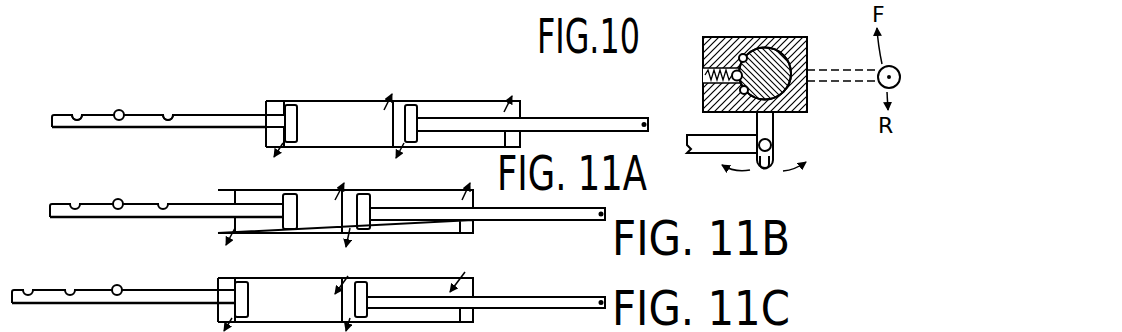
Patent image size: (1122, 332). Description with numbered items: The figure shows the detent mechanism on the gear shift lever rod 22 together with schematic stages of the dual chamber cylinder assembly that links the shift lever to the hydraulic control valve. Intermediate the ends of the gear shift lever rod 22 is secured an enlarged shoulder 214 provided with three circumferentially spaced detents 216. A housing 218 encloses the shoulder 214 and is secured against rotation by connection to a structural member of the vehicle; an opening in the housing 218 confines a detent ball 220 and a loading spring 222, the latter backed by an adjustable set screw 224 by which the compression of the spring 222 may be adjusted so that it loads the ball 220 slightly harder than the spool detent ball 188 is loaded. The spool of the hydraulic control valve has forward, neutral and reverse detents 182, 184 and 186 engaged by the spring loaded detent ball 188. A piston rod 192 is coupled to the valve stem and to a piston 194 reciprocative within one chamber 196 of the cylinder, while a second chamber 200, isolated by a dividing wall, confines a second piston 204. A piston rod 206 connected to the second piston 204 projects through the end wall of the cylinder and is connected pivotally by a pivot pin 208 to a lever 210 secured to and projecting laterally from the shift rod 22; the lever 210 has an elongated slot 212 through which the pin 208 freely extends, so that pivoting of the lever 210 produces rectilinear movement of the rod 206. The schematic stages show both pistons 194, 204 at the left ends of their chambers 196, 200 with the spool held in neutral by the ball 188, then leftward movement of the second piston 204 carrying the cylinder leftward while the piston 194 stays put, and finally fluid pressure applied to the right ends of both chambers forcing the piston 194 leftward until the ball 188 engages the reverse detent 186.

In FIG. 10, the gear shift lever rod 22 is at (866, 86).
In FIG. 11A, the forward detent 182 is at (77, 116).
In FIG. 11A, the neutral detent 184 is at (120, 121).
In FIG. 11A, the reverse detent 186 is at (169, 113).
In FIG. 11A, the detent ball 188 is at (121, 111).
In FIG. 11B, the detent ball 188 is at (121, 200).
In FIG. 11C, the detent ball 188 is at (121, 287).
In FIG. 11A, the piston rod 192 is at (232, 114).
In FIG. 11A, the piston 194 is at (289, 108).
In FIG. 11B, the piston 194 is at (291, 205).
In FIG. 11C, the piston 194 is at (244, 290).
In FIG. 11A, the chamber 196 is at (341, 110).
In FIG. 11C, the chamber 196 is at (295, 290).
In FIG. 11A, the second chamber 200 is at (456, 115).
In FIG. 11C, the second chamber 200 is at (417, 290).
In FIG. 11A, the second piston 204 is at (410, 108).
In FIG. 11B, the second piston 204 is at (367, 203).
In FIG. 10, the piston rod 206 is at (716, 146).
In FIG. 11A, the piston rod 206 is at (573, 114).
In FIG. 10, the pivot pin 208 is at (772, 145).
In FIG. 10, the lever 210 is at (773, 170).
In FIG. 10, the elongated slot 212 is at (778, 157).
In FIG. 10, the enlarged shoulder 214 is at (782, 52).
In FIG. 10, the detents 216 is at (744, 56).
In FIG. 10, the housing 218 is at (806, 47).
In FIG. 10, the detent ball 220 is at (728, 62).
In FIG. 10, the loading spring 222 is at (706, 57).
In FIG. 10, the adjustable set screw 224 is at (705, 73).